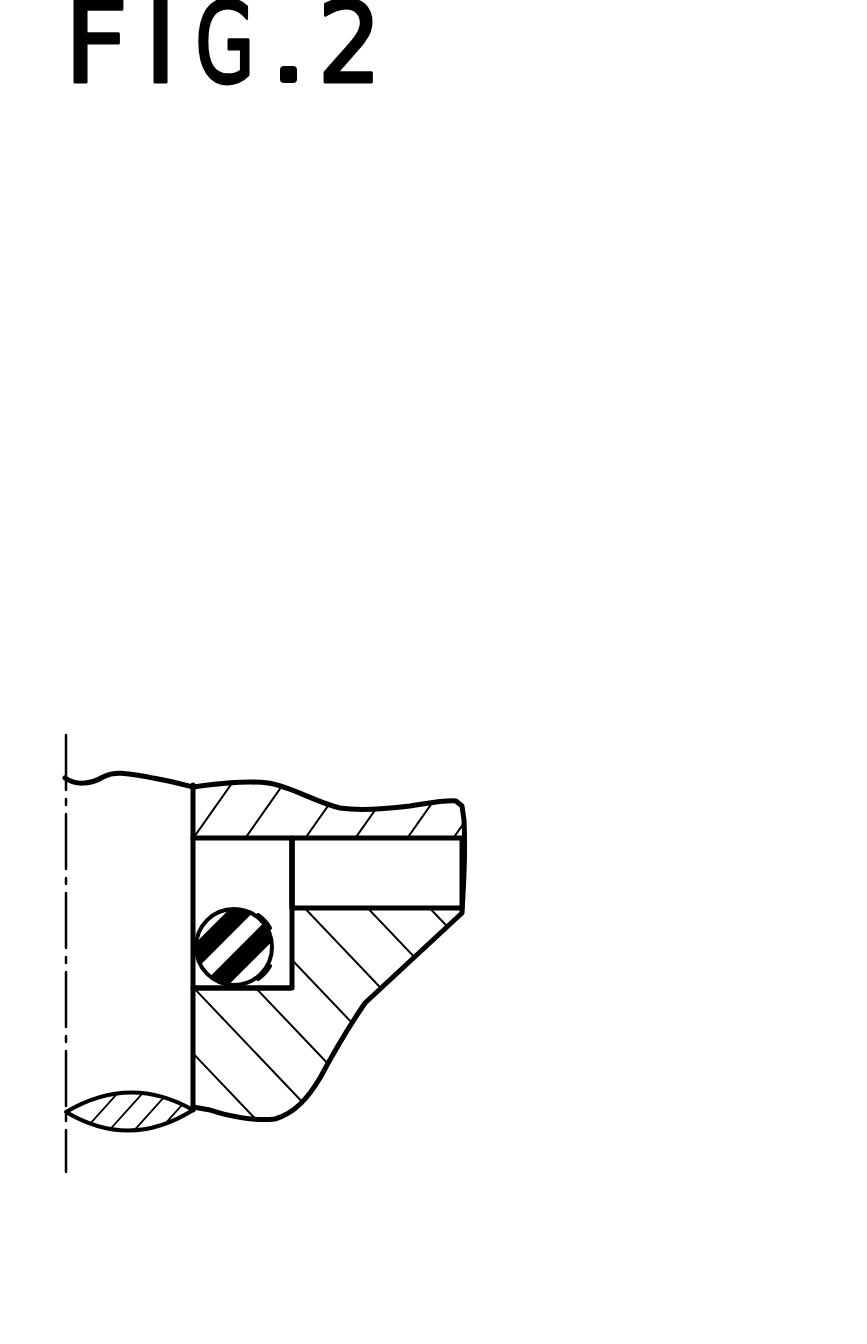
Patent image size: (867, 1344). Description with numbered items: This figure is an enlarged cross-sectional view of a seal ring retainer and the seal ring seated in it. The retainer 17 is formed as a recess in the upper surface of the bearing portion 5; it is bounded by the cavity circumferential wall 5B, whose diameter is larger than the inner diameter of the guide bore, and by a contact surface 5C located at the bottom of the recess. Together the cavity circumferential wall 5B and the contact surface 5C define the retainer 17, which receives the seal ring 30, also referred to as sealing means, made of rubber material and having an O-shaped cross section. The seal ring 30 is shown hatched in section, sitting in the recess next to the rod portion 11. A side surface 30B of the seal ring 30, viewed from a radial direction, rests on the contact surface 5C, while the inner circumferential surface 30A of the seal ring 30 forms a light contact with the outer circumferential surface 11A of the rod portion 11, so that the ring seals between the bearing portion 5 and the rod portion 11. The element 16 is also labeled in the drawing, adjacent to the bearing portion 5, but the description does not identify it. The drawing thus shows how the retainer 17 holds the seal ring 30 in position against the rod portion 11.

The bearing portion 5 is at (293, 948).
The cavity circumferential wall 5B is at (277, 920).
The contact surface 5C is at (280, 983).
The rod portion 11 is at (128, 1022).
The outer circumferential surface 11A is at (203, 883).
The bushing 16 is at (380, 863).
The retainer 17 is at (240, 880).
The seal ring 30 is at (320, 954).
The inner circumferential surface 30A is at (193, 947).
The side surface 30B is at (237, 993).